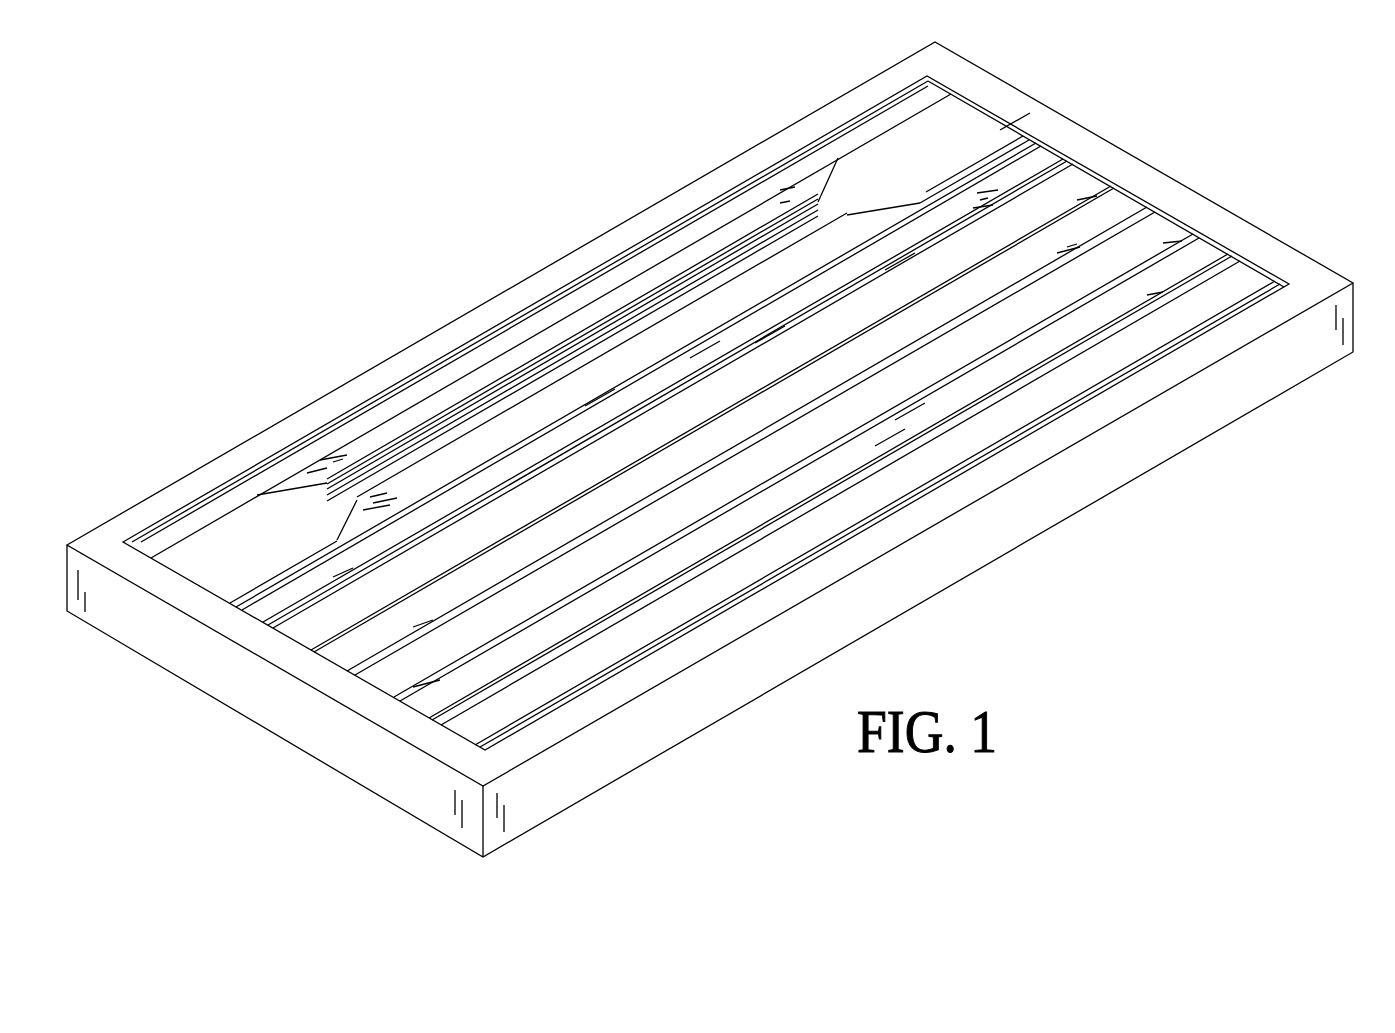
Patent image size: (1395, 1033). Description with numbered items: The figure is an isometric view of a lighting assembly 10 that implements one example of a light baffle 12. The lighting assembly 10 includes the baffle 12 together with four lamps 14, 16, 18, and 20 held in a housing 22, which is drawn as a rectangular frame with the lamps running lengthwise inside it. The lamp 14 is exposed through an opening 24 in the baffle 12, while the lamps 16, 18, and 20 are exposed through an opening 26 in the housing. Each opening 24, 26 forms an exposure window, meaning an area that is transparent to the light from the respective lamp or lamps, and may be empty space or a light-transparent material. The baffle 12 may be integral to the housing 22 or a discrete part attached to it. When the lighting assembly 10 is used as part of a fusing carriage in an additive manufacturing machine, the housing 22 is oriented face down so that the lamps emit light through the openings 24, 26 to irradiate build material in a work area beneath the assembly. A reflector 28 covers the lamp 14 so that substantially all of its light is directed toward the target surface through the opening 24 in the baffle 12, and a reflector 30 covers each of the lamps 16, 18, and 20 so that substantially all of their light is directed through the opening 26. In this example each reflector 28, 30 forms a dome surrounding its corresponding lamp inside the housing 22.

The lighting assembly 10 is at (262, 310).
The baffle 12 is at (543, 337).
The lamp 14 is at (614, 335).
The lamp 16 is at (1103, 185).
The lamp 18 is at (1148, 222).
The lamp 20 is at (1237, 272).
The housing 22 is at (597, 255).
The opening 24 is at (262, 505).
The opening 26 is at (688, 228).
The reflector 28 is at (1060, 188).
The reflector 30 is at (1142, 237).